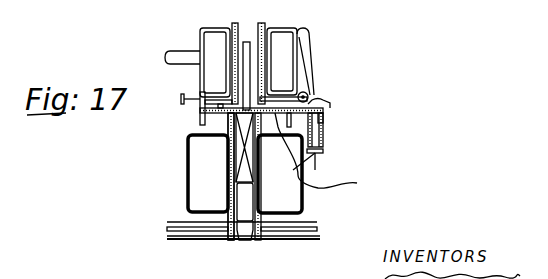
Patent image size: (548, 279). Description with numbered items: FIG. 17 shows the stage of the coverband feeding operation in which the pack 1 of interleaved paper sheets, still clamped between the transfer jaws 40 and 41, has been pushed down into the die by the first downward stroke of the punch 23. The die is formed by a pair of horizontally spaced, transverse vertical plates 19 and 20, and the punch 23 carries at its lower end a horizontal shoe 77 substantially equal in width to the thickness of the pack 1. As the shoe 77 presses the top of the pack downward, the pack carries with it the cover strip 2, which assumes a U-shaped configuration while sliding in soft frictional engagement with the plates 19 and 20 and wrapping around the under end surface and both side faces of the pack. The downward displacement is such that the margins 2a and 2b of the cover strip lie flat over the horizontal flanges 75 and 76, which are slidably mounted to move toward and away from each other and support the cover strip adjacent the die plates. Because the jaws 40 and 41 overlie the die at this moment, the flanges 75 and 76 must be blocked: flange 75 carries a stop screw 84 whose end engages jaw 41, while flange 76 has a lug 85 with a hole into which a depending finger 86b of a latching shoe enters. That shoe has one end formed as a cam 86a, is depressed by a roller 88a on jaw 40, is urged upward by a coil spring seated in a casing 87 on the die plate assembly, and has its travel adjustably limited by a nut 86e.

The pack 1 is at (248, 172).
The cover strip 2 is at (237, 241).
The end portion of the cover strip 2a is at (275, 92).
The end portion of the cover strip 2b is at (200, 110).
The vertical plate 19 is at (188, 199).
The vertical plate 20 is at (302, 200).
The punch 23 is at (250, 61).
The jaw 40 is at (261, 25).
The jaw 41 is at (233, 25).
The horizontal flange 75 is at (225, 153).
The horizontal flange 76 is at (303, 168).
The shoe 77 is at (207, 142).
The stop screw 84 is at (182, 97).
The lug 85 is at (326, 153).
The cam 86a is at (318, 112).
The depending finger 86b is at (327, 122).
The nut 86e is at (322, 153).
The casing 87 is at (327, 132).
The roller 88a is at (308, 91).